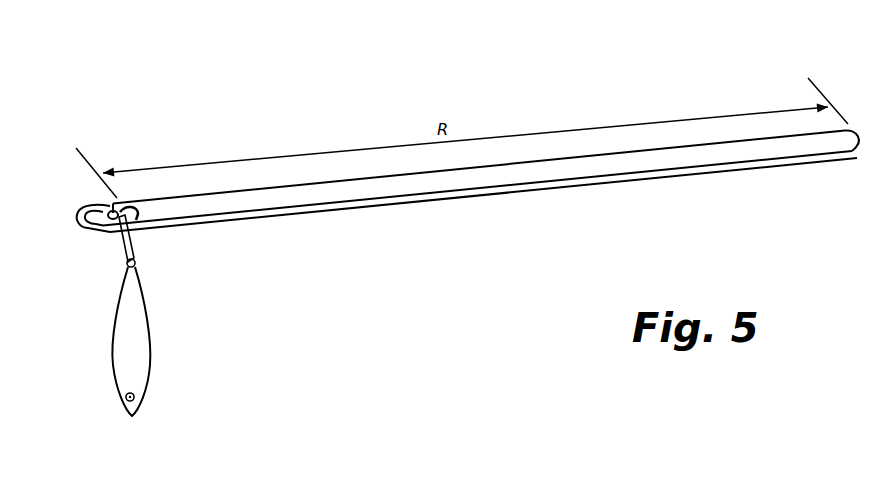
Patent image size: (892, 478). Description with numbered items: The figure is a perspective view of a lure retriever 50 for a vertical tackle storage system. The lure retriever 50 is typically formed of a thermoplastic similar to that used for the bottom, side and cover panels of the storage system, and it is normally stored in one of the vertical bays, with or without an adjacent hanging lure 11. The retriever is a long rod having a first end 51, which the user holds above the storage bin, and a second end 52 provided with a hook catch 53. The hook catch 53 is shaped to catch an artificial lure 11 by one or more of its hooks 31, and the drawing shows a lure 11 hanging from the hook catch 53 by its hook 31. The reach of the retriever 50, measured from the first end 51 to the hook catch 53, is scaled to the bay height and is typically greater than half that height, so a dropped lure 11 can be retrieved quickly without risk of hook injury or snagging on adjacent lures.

The lure retriever 50 is at (443, 162).
The first end 51 is at (848, 170).
The second end 52 is at (141, 241).
The hook catch 53 is at (108, 202).
The hook 31 is at (118, 240).
The artificial lure 11 is at (124, 357).